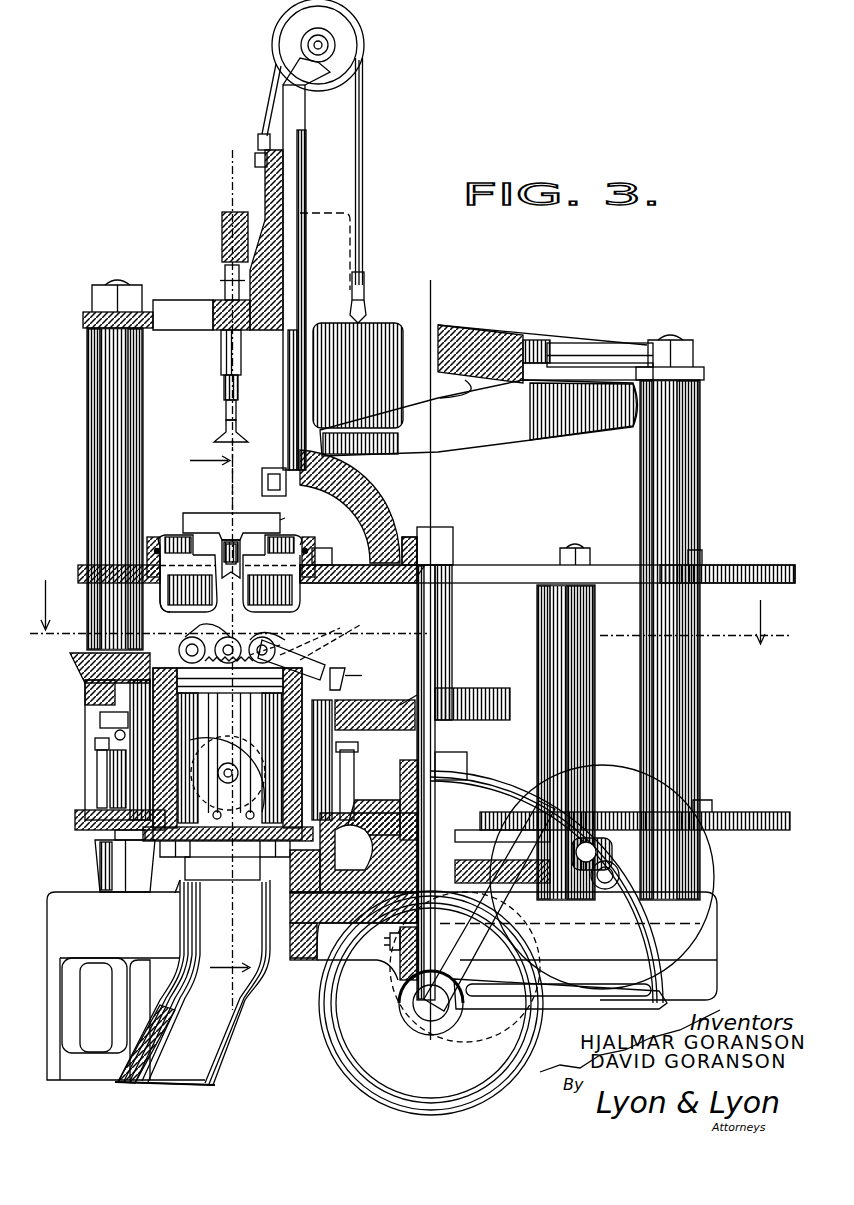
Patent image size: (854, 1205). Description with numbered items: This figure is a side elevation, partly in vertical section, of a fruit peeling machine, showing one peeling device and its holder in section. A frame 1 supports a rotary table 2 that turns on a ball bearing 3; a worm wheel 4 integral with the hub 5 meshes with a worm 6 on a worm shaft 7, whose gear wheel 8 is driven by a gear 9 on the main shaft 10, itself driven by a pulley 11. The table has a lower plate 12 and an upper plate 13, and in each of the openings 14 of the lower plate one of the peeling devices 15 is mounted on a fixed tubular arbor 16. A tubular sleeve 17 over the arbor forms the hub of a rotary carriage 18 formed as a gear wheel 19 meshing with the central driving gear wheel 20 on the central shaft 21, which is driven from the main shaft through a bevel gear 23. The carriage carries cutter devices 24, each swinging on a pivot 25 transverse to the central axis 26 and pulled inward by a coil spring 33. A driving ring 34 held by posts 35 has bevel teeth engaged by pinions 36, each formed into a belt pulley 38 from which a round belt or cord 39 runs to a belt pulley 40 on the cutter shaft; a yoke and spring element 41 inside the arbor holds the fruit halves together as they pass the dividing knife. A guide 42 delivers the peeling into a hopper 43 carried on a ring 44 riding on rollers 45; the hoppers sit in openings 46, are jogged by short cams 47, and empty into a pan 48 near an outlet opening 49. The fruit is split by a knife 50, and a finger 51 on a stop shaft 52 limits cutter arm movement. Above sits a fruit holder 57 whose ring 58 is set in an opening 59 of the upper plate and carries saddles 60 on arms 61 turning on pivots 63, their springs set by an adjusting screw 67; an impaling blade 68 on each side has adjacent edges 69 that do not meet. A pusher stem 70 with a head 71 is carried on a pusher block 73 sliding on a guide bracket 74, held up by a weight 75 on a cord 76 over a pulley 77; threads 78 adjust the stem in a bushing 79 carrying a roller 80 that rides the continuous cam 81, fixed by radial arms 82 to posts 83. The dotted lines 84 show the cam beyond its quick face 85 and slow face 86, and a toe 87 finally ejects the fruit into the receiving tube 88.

The frame 1 is at (300, 960).
The rotary table 2 is at (520, 538).
The ball bearing 3 is at (375, 800).
The worm wheel 4 is at (535, 895).
The nave or hub 5 is at (400, 790).
The worm 6 is at (595, 885).
The worm shaft 7 is at (608, 880).
The gear wheel 8 is at (717, 950).
The gear 9 is at (345, 1080).
The main shaft 10 is at (425, 1015).
The pulley 11 is at (478, 773).
The lower plate 12 is at (740, 812).
The upper plate 13 is at (735, 575).
The openings 14 is at (100, 860).
The peeling devices 15 is at (305, 665).
The tubular arbor 16 is at (250, 857).
The tubular sleeve 17 is at (75, 820).
The rotary carriage 18 is at (345, 730).
The gear wheel 19 is at (420, 695).
The central driving gear wheel 20 is at (490, 688).
The central shaft 21 is at (450, 605).
The bevel gear 23 is at (395, 955).
The cutter devices 24 is at (281, 627).
The pivot 25 is at (318, 625).
The central axis 26 is at (228, 500).
The coil spring 33 is at (230, 636).
The driving ring 34 is at (95, 745).
The posts 35 is at (97, 780).
The pinions 36 is at (194, 982).
The belt pulley 38 is at (90, 893).
The round belt or cord 39 is at (227, 754).
The belt pulley 40 is at (265, 640).
The frame rib 41 is at (175, 893).
The guide 42 is at (345, 672).
The hopper 43 is at (362, 678).
The ring 44 is at (100, 718).
The rollers 45 is at (115, 735).
The openings 46 is at (85, 690).
The cams 47 is at (228, 637).
The pan 48 is at (340, 790).
The outlet opening 49 is at (115, 835).
The knife 50 is at (180, 640).
The finger 51 is at (250, 655).
The stop shaft 52 is at (320, 565).
The fruit holder 57 is at (370, 520).
The ring 58 is at (165, 535).
The opening 59 is at (160, 560).
The saddles 60 is at (200, 626).
The arms 61 is at (248, 555).
The pivots 63 is at (305, 520).
The adjusting screw 67 is at (231, 557).
The impaling blade 68 is at (165, 590).
The adjacent edges 69 is at (230, 583).
The pusher stem 70 is at (218, 438).
The head 71 is at (215, 445).
The pusher block 73 is at (305, 180).
The guide bracket 74 is at (230, 405).
The weight 75 is at (365, 325).
The cord 76 is at (363, 145).
The pulley 77 is at (365, 48).
The threads 78 is at (224, 390).
The bushing 79 is at (221, 350).
The roller 80 is at (222, 266).
The continuous cam 81 is at (500, 335).
The radial arms 82 is at (170, 316).
The posts 83 is at (88, 405).
The dotted lines 84 is at (350, 245).
The quick face 85 is at (305, 305).
The slow face 86 is at (470, 380).
The toe 87 is at (270, 487).
The receiving tube 88 is at (240, 1052).